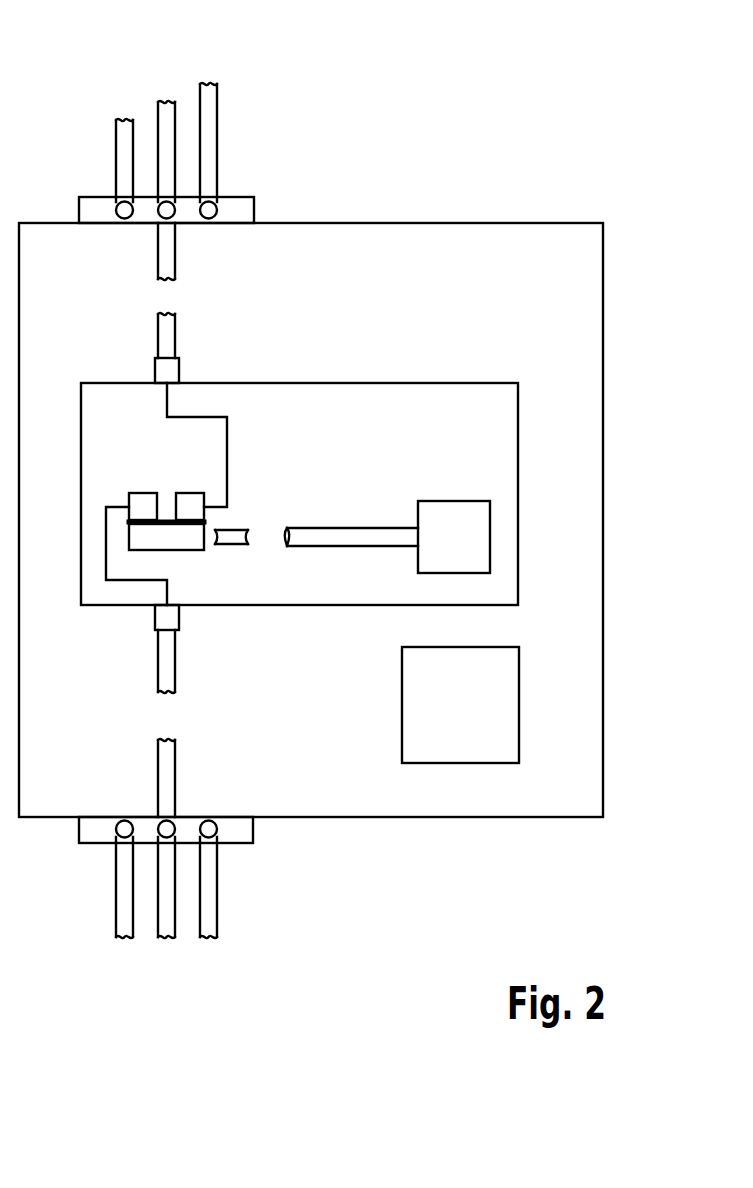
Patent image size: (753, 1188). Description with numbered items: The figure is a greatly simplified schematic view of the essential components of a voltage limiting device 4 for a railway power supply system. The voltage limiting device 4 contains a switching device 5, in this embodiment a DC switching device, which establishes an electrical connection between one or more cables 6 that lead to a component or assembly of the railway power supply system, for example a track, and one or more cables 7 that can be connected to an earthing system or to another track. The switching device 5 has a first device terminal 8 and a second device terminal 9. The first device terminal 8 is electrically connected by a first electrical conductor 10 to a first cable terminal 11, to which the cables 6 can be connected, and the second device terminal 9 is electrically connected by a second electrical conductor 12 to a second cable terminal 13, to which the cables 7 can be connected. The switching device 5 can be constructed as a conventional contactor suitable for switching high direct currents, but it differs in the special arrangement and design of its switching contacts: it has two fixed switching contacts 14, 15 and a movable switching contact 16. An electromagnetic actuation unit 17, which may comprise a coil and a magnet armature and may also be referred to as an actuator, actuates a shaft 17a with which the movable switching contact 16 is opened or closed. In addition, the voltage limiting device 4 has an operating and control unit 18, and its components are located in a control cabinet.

The voltage limiting device 4 is at (515, 222).
The switching device 5 is at (413, 381).
The cables 6 is at (124, 130).
The cables 7 is at (123, 928).
The first device terminal 8 is at (157, 372).
The second device terminal 9 is at (156, 614).
The first electrical conductor 10 is at (167, 253).
The first cable terminal 11 is at (243, 211).
The second electrical conductor 12 is at (167, 778).
The second cable terminal 13 is at (243, 830).
The fixed switching contact 14 is at (188, 505).
The fixed switching contact 15 is at (142, 505).
The movable switching contact 16 is at (190, 542).
The electromagnetic actuation unit 17 is at (452, 504).
The shaft 17a is at (345, 535).
The operating and control unit 18 is at (412, 707).